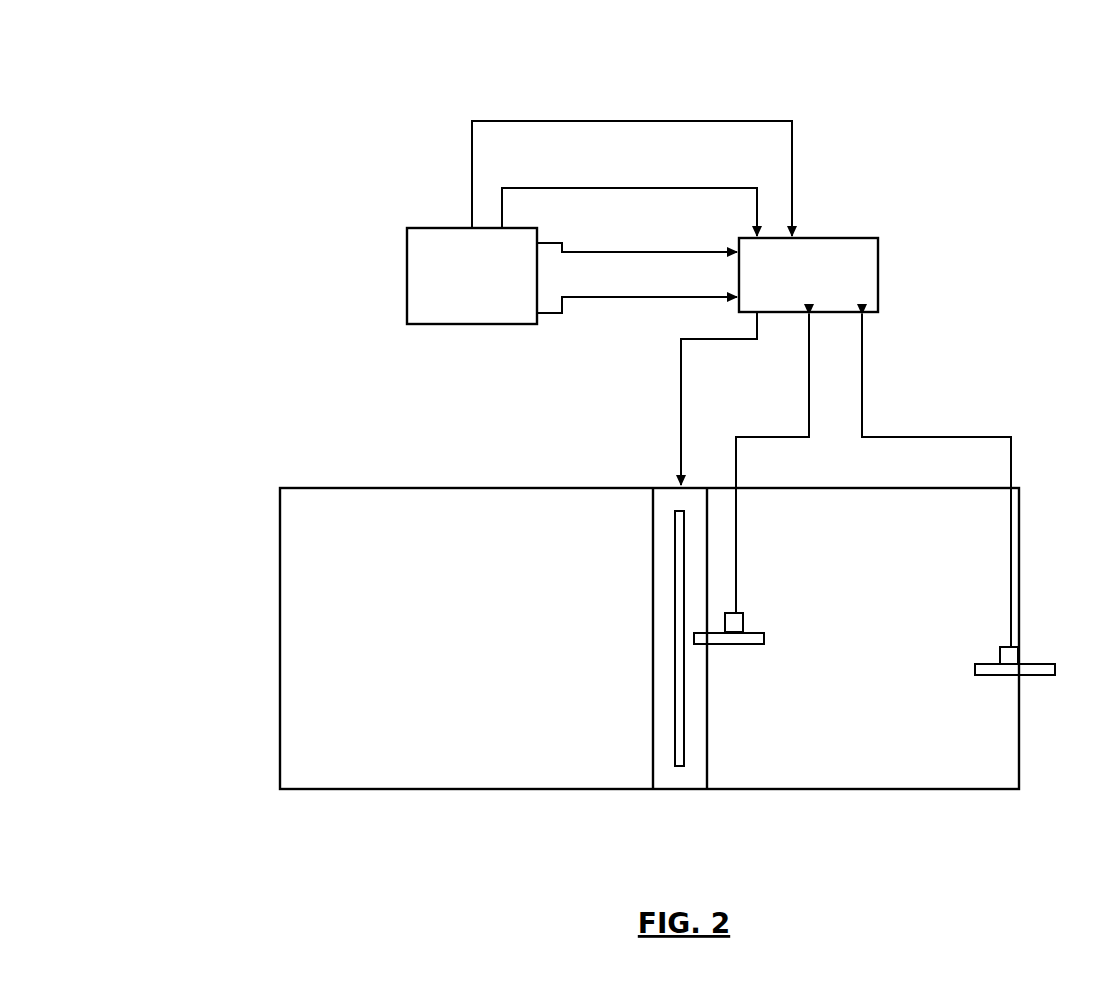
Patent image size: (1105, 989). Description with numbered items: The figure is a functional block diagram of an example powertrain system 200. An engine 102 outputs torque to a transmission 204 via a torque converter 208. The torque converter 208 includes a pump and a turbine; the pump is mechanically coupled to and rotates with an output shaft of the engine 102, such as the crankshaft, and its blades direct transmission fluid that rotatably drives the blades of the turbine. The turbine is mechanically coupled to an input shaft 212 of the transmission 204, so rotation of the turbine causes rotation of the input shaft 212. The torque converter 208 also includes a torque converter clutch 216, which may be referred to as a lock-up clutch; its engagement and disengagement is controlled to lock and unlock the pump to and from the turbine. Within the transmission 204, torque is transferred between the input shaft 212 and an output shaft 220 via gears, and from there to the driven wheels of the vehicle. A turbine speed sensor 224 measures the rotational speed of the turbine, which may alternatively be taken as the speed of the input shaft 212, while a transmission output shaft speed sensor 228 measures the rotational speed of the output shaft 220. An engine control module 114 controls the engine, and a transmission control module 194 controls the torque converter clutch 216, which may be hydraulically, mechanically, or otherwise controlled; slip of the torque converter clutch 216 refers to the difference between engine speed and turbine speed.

The powertrain system 200 is at (102, 88).
The engine control module 114 is at (420, 227).
The transmission control module 194 is at (812, 238).
The engine 102 is at (469, 487).
The torque converter 208 is at (667, 487).
The torque converter clutch 216 is at (675, 541).
The transmission 204 is at (863, 487).
The turbine speed sensor 224 is at (743, 626).
The input shaft 212 is at (729, 645).
The transmission output shaft speed sensor 228 is at (1000, 653).
The output shaft 220 is at (1037, 676).